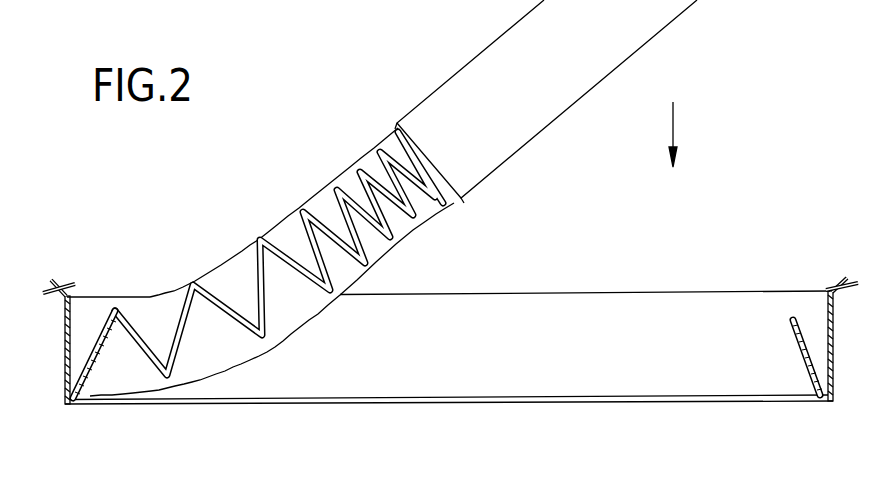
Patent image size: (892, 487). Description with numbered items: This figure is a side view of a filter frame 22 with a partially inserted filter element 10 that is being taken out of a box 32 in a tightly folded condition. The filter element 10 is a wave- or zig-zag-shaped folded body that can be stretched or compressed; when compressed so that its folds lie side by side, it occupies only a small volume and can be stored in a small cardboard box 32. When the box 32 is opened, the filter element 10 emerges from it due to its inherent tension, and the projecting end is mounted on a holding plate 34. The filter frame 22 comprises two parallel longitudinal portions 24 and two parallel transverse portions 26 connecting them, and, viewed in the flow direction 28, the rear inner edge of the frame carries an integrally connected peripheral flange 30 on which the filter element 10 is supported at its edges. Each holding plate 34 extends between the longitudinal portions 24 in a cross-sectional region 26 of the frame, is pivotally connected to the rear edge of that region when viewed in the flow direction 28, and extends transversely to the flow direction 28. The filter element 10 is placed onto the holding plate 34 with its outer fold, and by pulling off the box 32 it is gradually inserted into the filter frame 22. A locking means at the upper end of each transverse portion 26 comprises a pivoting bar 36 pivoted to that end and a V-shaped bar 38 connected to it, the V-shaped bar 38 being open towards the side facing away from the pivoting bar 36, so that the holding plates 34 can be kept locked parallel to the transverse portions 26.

The filter element 10 is at (311, 178).
The filter frame 22 is at (440, 345).
The longitudinal portions 24 is at (507, 320).
The transverse portions 26 is at (63, 368).
The flow direction arrow 28 is at (674, 118).
The peripheral flange 30 is at (555, 403).
The cardboard box 32 is at (495, 58).
The holding plate 34 is at (106, 362).
The pivoting bar 36 is at (45, 293).
The V-shaped bar 38 is at (55, 278).